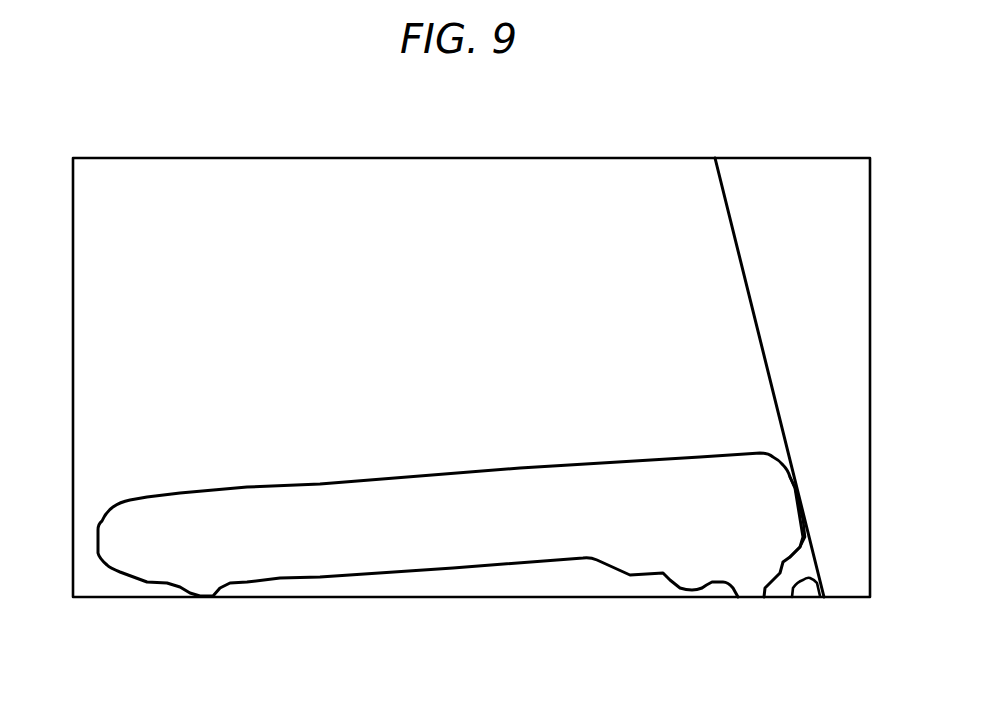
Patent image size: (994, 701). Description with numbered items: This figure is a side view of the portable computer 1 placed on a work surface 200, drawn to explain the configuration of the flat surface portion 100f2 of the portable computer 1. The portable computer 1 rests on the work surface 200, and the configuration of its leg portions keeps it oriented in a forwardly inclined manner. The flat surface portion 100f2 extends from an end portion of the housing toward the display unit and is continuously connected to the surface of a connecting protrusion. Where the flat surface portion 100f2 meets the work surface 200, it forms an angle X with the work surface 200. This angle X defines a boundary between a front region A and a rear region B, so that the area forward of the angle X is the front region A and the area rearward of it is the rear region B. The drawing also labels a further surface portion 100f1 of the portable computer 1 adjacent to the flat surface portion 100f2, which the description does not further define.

The portable computer 1 is at (329, 453).
The first surface portion 100f1 is at (805, 540).
The flat surface portion 100f2 is at (798, 492).
The work surface 200 is at (488, 597).
The front region A is at (418, 287).
The rear region B is at (812, 236).
The angle X is at (792, 597).